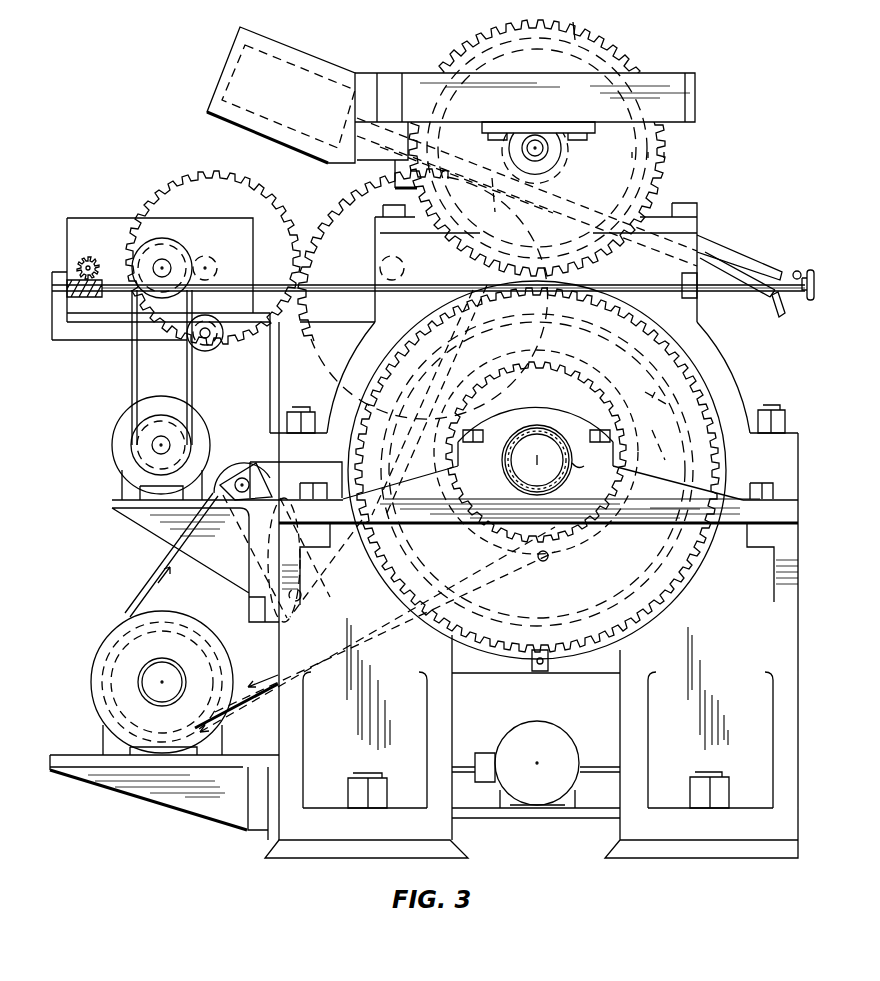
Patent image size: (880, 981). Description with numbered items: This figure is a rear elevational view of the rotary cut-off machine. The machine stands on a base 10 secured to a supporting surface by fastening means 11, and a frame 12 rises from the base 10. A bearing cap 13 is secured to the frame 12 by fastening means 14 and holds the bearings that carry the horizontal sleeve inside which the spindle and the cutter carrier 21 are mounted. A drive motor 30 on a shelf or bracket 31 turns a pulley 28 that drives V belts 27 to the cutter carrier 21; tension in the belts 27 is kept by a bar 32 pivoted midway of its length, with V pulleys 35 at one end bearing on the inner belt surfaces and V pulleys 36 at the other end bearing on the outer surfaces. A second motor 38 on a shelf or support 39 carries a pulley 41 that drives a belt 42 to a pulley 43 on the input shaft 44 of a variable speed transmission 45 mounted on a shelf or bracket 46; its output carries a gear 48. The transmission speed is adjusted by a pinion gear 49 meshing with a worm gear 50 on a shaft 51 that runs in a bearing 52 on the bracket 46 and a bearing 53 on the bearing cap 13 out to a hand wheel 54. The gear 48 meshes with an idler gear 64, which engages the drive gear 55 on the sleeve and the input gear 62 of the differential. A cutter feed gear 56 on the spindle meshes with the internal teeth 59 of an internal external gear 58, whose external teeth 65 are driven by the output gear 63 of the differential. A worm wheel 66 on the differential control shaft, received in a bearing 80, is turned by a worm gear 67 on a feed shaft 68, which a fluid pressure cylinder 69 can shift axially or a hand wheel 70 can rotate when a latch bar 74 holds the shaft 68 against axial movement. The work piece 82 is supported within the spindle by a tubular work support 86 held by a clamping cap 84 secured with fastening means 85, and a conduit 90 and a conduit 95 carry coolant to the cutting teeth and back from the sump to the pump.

The base 10 is at (666, 852).
The fastening means 11 is at (357, 788).
The frame 12 is at (272, 655).
The bearing cap 13 is at (728, 378).
The fastening means 14 is at (779, 412).
The cutter carrier 21 is at (654, 438).
The V belts 27 is at (157, 586).
The pulley 28 is at (194, 626).
The drive motor 30 is at (112, 641).
The shelf or bracket 31 is at (112, 780).
The bar 32 is at (258, 478).
The V pulleys 35 is at (236, 464).
The V pulleys 36 is at (311, 608).
The second motor 38 is at (113, 442).
The shelf or support 39 is at (146, 518).
The pulley 41 is at (196, 447).
The belt 42 is at (132, 378).
The pulley 43 is at (152, 250).
The input shaft 44 is at (166, 265).
The variable speed transmission 45 is at (116, 211).
The shelf or bracket 46 is at (86, 333).
The gear 48 is at (207, 180).
The pinion gear 49 is at (88, 257).
The worm gear 50 is at (85, 292).
The shaft 51 is at (121, 289).
The bearing 52 is at (58, 277).
The bearing 53 is at (698, 298).
The hand wheel 54 is at (808, 301).
The drive gear 55 is at (670, 406).
The cutter feed gear 56 is at (503, 413).
The internal external gear 58 is at (686, 557).
The internal teeth 59 is at (541, 560).
The input gear 62 is at (620, 155).
The output gear 63 is at (575, 40).
The idler gear 64 is at (326, 206).
The external teeth 65 is at (640, 613).
The worm wheel 66 is at (536, 121).
The worm gear 67 is at (494, 194).
The feed shaft 68 is at (724, 270).
The fluid pressure cylinder 69 is at (318, 66).
The hand wheel 70 is at (777, 312).
The latch bar 74 is at (763, 266).
The bearing 80 is at (549, 153).
The work piece 82 is at (560, 458).
The clamping cap 84 is at (538, 412).
The fastening means 85 is at (598, 430).
The tubular work support 86 is at (576, 467).
The conduit 90 is at (470, 765).
The conduit 95 is at (598, 765).